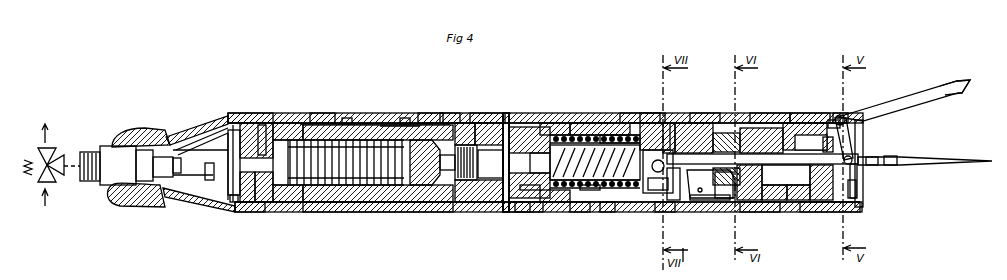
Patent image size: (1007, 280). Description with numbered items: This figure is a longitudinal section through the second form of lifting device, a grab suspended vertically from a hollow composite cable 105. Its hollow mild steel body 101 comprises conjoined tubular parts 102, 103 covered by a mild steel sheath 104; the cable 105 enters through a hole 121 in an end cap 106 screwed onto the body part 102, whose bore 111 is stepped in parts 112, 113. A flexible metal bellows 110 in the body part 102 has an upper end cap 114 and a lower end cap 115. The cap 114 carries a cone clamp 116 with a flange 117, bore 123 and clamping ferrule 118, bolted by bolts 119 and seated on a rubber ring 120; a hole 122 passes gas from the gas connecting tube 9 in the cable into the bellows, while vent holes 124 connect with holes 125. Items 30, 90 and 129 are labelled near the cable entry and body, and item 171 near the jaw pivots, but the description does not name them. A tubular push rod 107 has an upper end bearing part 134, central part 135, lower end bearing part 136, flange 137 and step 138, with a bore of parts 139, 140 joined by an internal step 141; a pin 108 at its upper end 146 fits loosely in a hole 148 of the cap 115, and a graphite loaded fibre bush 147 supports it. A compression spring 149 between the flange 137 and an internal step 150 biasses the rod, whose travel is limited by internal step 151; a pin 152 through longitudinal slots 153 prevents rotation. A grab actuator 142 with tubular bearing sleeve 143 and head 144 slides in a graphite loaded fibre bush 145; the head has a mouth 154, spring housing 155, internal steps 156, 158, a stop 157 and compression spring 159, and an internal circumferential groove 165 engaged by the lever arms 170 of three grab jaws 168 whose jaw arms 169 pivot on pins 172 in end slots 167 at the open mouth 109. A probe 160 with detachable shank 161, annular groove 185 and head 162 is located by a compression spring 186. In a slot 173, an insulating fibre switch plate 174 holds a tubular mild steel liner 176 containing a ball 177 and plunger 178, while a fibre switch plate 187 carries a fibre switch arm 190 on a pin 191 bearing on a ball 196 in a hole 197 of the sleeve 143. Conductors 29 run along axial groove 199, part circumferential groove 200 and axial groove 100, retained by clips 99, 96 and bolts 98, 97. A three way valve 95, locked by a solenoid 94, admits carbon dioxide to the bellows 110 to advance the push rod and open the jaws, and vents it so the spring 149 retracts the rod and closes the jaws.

The gas connecting tube 9 is at (215, 132).
The conductors 29 is at (183, 146).
The neck fitting 30 is at (168, 136).
The nozzle shell 90 is at (183, 192).
The solenoid 94 is at (31, 157).
The three way valve 95 is at (44, 192).
The clips 96 is at (523, 214).
The bolts 97 is at (530, 192).
The bolts 98 is at (347, 117).
The clips 99 is at (321, 118).
The axial groove 100 is at (566, 190).
The hollow mild steel body 101 is at (446, 172).
The tubular body part 102 is at (395, 204).
The tubular body part 103 is at (480, 200).
The mild steel sheath 104 is at (506, 204).
The hollow composite cable 105 is at (88, 183).
The end cap 106 is at (120, 187).
The tubular push rod 107 is at (542, 204).
The pin 108 is at (466, 182).
The open mouth 109 is at (862, 208).
The flexible metal bellows 110 is at (370, 187).
The bore 111 is at (302, 127).
The bore part 112 is at (350, 204).
The bore part 113 is at (480, 133).
The upper bellows end cap 114 is at (270, 140).
The lower bellows end cap 115 is at (445, 123).
The cone clamp 116 is at (232, 150).
The flange 117 is at (246, 138).
The clamping ferrule 118 is at (198, 155).
The bolts 119 is at (237, 116).
The rubber ring 120 is at (246, 204).
The hole 121 is at (150, 130).
The hole 122 is at (263, 204).
The bore 123 is at (211, 181).
The vent holes 124 is at (285, 125).
The holes 125 is at (262, 128).
The liner 129 is at (395, 124).
The upper end bearing part 134 is at (505, 118).
The central part 135 is at (625, 122).
The lower end bearing part 136 is at (790, 128).
The flange 137 is at (560, 158).
The step 138 is at (700, 122).
The bore part 139 is at (645, 120).
The bore part 140 is at (806, 135).
The internal step 141 is at (686, 130).
The grab actuator 142 is at (800, 122).
The tubular bearing sleeve 143 is at (760, 122).
The head 144 is at (864, 140).
The graphite loaded fibre bush 145 is at (755, 130).
The upper end 146 is at (456, 125).
The graphite loaded fibre bush 147 is at (490, 164).
The hole 148 is at (430, 172).
The compression spring 149 is at (590, 148).
The internal step 150 is at (615, 136).
The internal step 151 is at (577, 128).
The pin 152 is at (518, 130).
The longitudinal slots 153 is at (530, 170).
The mouth 154 is at (858, 186).
The spring housing 155 is at (762, 190).
The internal step 156 is at (785, 202).
The stop 157 is at (808, 202).
The internal step 158 is at (826, 137).
The compression spring 159 is at (818, 200).
The probe 160 is at (893, 166).
The detachable shank 161 is at (752, 156).
The head 162 is at (650, 172).
The internal circumferential groove 165 is at (848, 120).
The end slots 167 is at (838, 116).
The grab jaws 168 is at (880, 102).
The jaw arms 169 is at (913, 96).
The lever arms 170 is at (871, 166).
The pivot block 171 is at (830, 103).
The pins 172 is at (853, 200).
The slot 173 is at (654, 192).
The insulating fibre switch plate 174 is at (672, 202).
The tubular mild steel liner 176 is at (683, 264).
The ball 177 is at (651, 132).
The plunger 178 is at (662, 204).
The annular groove 185 is at (670, 126).
The compression spring 186 is at (549, 128).
The fibre switch plate 187 is at (706, 202).
The fibre switch arm 190 is at (716, 200).
The pin 191 is at (691, 200).
The ball 196 is at (725, 134).
The hole 197 is at (760, 204).
The axial groove 199 is at (375, 122).
The part circumferential groove 200 is at (472, 121).